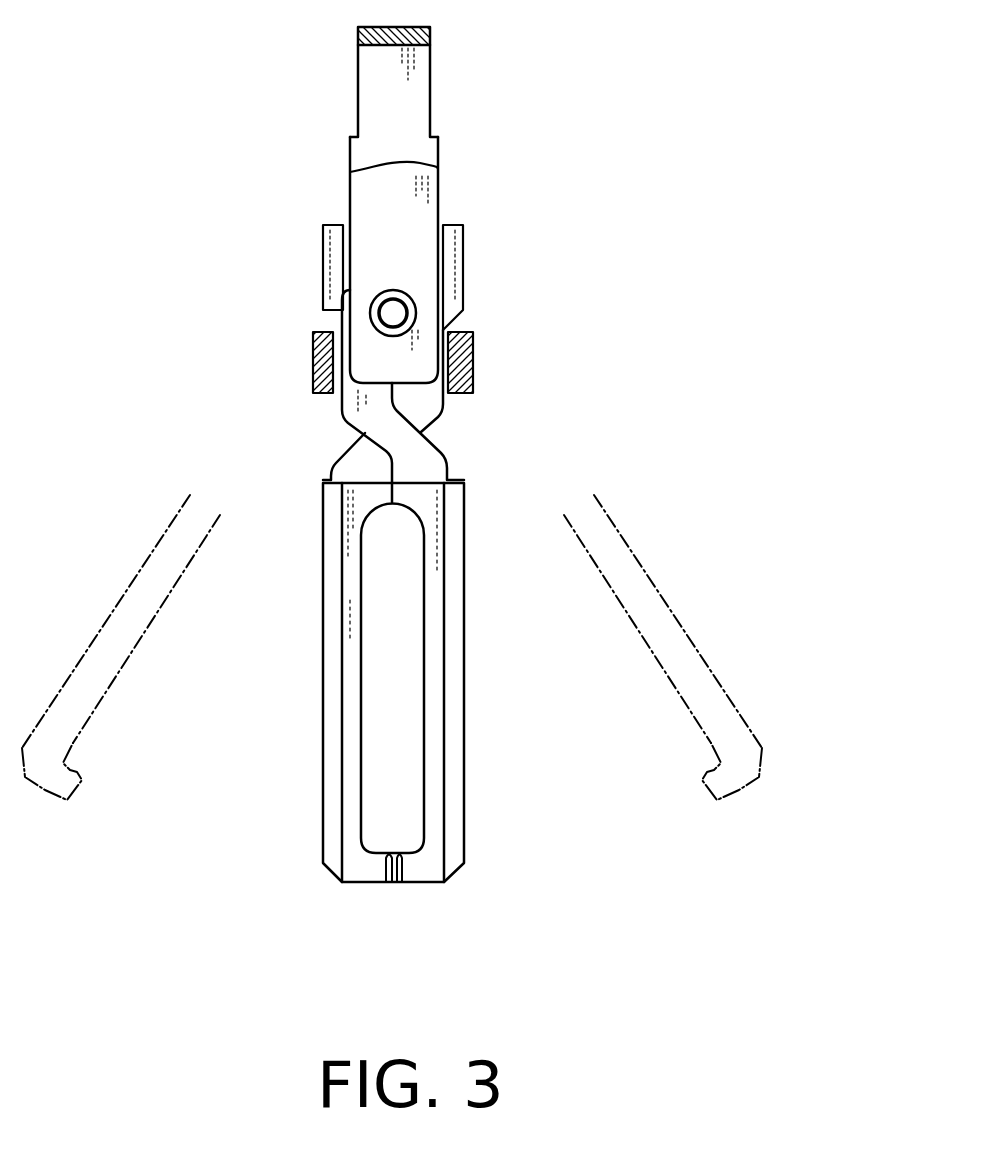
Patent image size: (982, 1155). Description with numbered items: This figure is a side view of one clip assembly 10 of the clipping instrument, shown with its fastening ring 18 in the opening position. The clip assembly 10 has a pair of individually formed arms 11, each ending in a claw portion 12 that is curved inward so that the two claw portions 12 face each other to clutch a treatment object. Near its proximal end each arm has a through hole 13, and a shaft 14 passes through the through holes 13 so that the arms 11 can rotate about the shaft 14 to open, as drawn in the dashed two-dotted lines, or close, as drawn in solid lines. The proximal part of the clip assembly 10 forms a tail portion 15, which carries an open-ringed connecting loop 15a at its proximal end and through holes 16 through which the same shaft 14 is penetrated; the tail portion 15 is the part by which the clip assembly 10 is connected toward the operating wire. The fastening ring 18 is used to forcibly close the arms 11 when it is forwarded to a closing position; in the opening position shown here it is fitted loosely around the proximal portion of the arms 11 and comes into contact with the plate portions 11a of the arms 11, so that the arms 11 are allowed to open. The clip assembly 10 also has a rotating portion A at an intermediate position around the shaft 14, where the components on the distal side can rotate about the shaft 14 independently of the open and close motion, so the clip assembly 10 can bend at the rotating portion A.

The clip assembly 10 is at (562, 114).
The arms 11 is at (323, 698).
The plate portions 11a is at (322, 275).
The claw portion 12 is at (384, 872).
The through hole 13 is at (249, 316).
The shaft 14 is at (249, 316).
The tail portion 15 is at (410, 193).
The connecting loop 15a is at (358, 72).
The through holes 16 is at (376, 316).
The fastening ring 18 is at (473, 362).
The rotating portion A is at (249, 316).